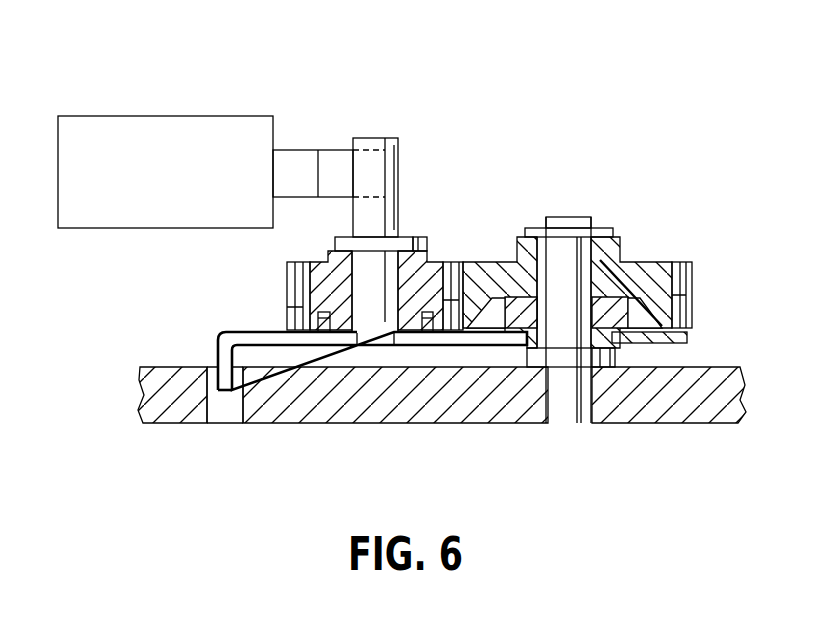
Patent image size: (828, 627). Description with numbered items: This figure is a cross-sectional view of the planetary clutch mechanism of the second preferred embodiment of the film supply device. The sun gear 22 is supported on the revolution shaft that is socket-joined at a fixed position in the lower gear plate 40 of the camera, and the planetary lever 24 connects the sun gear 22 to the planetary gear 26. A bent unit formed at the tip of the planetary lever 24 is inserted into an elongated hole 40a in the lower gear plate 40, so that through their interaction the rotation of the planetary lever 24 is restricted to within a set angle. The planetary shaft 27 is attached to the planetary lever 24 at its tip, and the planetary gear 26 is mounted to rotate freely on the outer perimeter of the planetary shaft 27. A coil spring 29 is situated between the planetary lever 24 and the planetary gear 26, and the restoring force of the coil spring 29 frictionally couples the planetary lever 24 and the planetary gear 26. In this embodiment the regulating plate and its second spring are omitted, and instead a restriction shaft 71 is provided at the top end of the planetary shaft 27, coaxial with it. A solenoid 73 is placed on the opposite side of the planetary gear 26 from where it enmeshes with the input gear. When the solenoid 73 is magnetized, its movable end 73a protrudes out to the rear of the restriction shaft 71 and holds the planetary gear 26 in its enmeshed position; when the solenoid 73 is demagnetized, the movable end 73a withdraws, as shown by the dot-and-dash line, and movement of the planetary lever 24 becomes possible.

The solenoid 73 is at (160, 125).
The movable end 73a is at (325, 163).
The restriction shaft 71 is at (372, 143).
The planetary shaft 27 is at (377, 265).
The planetary gear 26 is at (425, 273).
The sun gear 22 is at (642, 283).
The planetary lever 24 is at (242, 338).
The coil spring 29 is at (330, 320).
The lower gear plate 40 is at (466, 410).
The elongated hole 40a is at (206, 405).